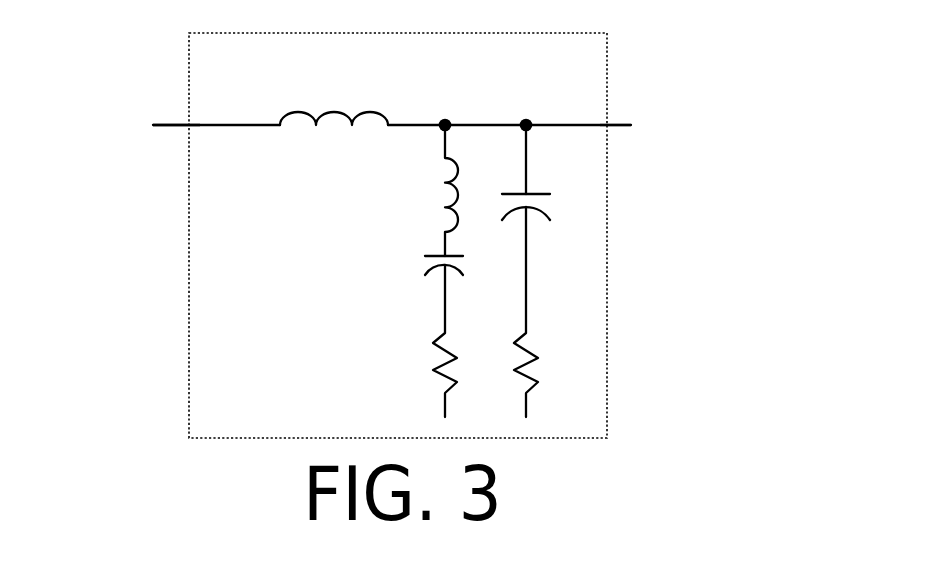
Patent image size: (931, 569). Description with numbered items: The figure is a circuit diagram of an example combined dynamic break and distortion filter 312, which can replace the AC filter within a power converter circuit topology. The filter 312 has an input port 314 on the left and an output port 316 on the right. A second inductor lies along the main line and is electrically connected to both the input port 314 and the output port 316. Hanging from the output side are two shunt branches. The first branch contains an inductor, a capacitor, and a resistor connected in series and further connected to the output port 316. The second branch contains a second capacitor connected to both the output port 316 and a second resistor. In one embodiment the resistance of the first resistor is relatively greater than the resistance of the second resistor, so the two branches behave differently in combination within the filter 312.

The combined dynamic break and distortion filter 312 is at (612, 99).
The input port 314 is at (198, 127).
The output port 316 is at (610, 127).